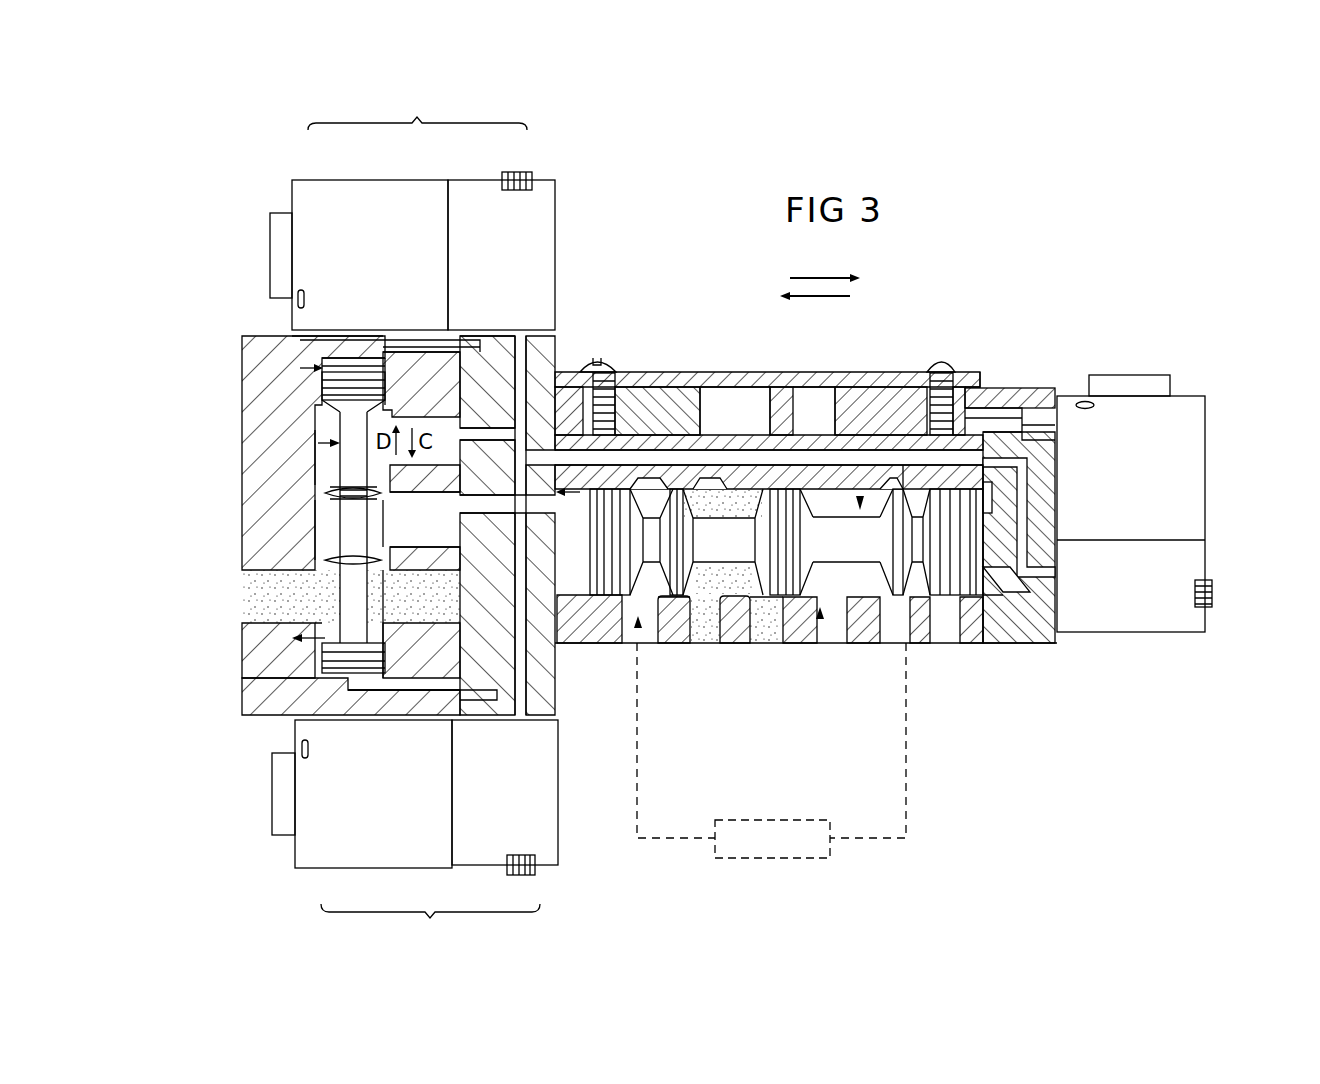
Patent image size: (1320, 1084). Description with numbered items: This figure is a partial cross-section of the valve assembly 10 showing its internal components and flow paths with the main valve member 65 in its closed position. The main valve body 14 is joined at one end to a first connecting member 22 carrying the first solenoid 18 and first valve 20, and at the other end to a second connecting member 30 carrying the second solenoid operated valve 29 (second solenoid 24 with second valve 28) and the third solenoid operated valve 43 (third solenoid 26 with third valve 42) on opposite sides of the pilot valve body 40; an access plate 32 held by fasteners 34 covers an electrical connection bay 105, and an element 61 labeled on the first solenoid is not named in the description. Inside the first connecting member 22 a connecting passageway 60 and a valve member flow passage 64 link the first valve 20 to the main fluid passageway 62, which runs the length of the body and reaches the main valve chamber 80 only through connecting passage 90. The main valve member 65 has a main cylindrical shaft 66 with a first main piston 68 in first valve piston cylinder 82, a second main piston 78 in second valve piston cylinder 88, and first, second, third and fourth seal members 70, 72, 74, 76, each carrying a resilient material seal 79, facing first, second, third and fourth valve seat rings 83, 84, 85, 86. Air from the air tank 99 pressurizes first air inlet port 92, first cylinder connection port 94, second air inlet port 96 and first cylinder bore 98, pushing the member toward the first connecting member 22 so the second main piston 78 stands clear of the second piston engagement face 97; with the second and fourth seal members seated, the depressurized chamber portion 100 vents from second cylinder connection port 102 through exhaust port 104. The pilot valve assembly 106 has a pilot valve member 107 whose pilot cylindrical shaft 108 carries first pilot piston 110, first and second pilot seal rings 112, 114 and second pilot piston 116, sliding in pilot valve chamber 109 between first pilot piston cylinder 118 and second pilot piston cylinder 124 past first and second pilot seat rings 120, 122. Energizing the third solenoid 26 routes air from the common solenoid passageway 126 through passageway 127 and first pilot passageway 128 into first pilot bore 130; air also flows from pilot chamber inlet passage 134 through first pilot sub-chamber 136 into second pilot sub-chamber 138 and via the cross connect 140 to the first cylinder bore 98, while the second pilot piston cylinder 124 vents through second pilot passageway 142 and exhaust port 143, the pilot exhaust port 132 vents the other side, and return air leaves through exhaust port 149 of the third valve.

The valve assembly 10 is at (1003, 270).
The main valve body 14 is at (950, 362).
The first solenoid 18 is at (1185, 412).
The first valve 20 is at (1128, 620).
The first connecting member 22 is at (1000, 405).
The second solenoid 24 is at (400, 850).
The third solenoid 26 is at (395, 200).
The second valve 28 is at (465, 855).
The second solenoid operated valve 29 is at (430, 924).
The second connecting member 30 is at (545, 712).
The access plate 32 is at (637, 387).
The fasteners 34 is at (598, 362).
The pilot valve body 40 is at (330, 658).
The third valve 42 is at (532, 250).
The third solenoid operated valve 43 is at (417, 111).
The connecting passageway 60 is at (1048, 575).
The screw 61 is at (1213, 600).
The main fluid passageway 62 is at (990, 455).
The valve member flow passage 64 is at (1042, 640).
The main valve member 65 is at (892, 465).
The main cylindrical shaft 66 is at (860, 495).
The first main piston 68 is at (936, 600).
The first seal member 70 is at (880, 617).
The second seal member 72 is at (800, 447).
The third seal member 74 is at (770, 485).
The fourth seal member 76 is at (660, 606).
The second main piston 78 is at (605, 600).
The resilient material seal 79 is at (330, 496).
The main valve chamber 80 is at (840, 533).
The first valve piston cylinder 82 is at (962, 608).
The first valve seat ring 83 is at (852, 617).
The second valve seat ring 84 is at (801, 622).
The third valve seat ring 85 is at (748, 620).
The fourth valve seat ring 86 is at (693, 620).
The second valve piston cylinder 88 is at (622, 602).
The connecting passage 90 is at (938, 365).
The first air inlet port 92 is at (898, 600).
The first cylinder connection port 94 is at (820, 617).
The second air inlet port 96 is at (638, 628).
The second piston engagement face 97 is at (643, 435).
The first cylinder bore 98 is at (574, 586).
The air tank 99 is at (768, 860).
The depressurized chamber portion 100 is at (716, 455).
The second cylinder connection port 102 is at (706, 630).
The exhaust port 104 is at (780, 625).
The electrical connection bay 105 is at (748, 410).
The pilot valve assembly 106 is at (213, 368).
The pilot valve member 107 is at (340, 445).
The pilot cylindrical shaft 108 is at (333, 452).
The pilot valve chamber 109 is at (335, 522).
The first pilot piston 110 is at (335, 390).
The first pilot seal ring 112 is at (330, 478).
The second pilot seal ring 114 is at (335, 545).
The second pilot piston 116 is at (330, 652).
The first pilot piston cylinder 118 is at (318, 366).
The first pilot seat ring 120 is at (338, 490).
The second pilot seat ring 122 is at (333, 560).
The second pilot piston cylinder 124 is at (305, 636).
The common solenoid passageway 126 is at (488, 435).
The passageway 127 is at (480, 338).
The first pilot passageway 128 is at (425, 405).
The first pilot bore 130 is at (322, 372).
The pilot exhaust port 132 is at (283, 582).
The pilot chamber inlet passage 134 is at (519, 355).
The first pilot sub-chamber 136 is at (428, 410).
The second pilot sub-chamber 138 is at (437, 541).
The pilot chamber-to-main-valve cross connect 140 is at (482, 504).
The second pilot passageway 142 is at (348, 690).
The exhaust port 143 is at (535, 875).
The exhaust port 149 is at (530, 172).